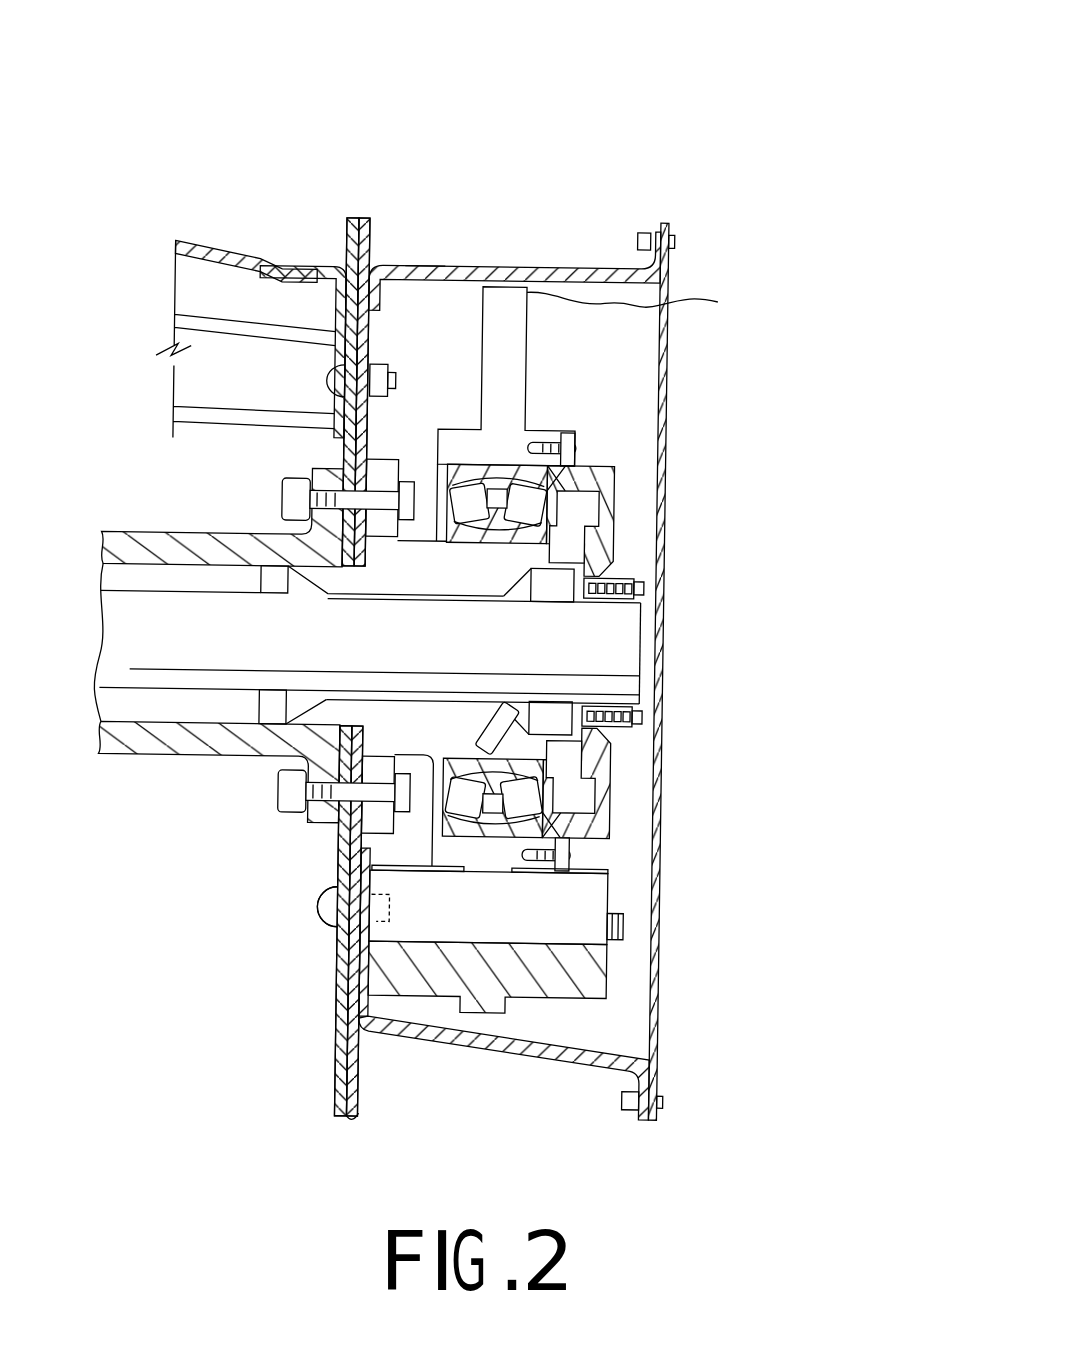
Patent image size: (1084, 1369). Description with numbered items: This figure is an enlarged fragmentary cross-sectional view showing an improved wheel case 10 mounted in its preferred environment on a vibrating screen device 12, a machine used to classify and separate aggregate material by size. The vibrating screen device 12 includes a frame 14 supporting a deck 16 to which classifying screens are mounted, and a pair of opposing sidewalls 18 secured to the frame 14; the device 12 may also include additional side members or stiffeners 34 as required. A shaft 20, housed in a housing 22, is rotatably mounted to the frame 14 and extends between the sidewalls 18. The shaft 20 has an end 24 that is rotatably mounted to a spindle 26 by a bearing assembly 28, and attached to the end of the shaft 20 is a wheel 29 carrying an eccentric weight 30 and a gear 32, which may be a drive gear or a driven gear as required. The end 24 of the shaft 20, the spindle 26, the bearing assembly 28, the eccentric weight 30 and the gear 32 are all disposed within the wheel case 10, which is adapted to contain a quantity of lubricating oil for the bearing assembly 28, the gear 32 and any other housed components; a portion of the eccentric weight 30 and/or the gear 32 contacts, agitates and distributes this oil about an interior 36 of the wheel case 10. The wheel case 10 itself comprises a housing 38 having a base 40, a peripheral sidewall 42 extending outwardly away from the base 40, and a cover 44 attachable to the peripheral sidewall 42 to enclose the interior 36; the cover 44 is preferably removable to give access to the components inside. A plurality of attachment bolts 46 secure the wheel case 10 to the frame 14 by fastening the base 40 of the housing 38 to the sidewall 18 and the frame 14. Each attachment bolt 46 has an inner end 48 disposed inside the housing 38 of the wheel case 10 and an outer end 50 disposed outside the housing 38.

The wheel case 10 is at (597, 150).
The vibrating screen device 12 is at (185, 880).
The frame 14 is at (330, 253).
The deck 16 is at (217, 244).
The sidewall 18 is at (355, 218).
The shaft 20 is at (545, 648).
The housing 22 is at (140, 760).
The end 24 is at (640, 665).
The spindle 26 is at (408, 577).
The bearing assembly 28 is at (524, 504).
The wheel 29 is at (510, 428).
The eccentric weight 30 is at (610, 960).
The gear 32 is at (642, 292).
The stiffener 34 is at (373, 218).
The interior 36 is at (630, 837).
The housing 38 is at (420, 257).
The base 40 is at (378, 323).
The peripheral sidewall 42 is at (570, 268).
The cover 44 is at (660, 847).
The attachment bolt 46 is at (393, 355).
The inner end 48 is at (388, 897).
The outer end 50 is at (328, 893).